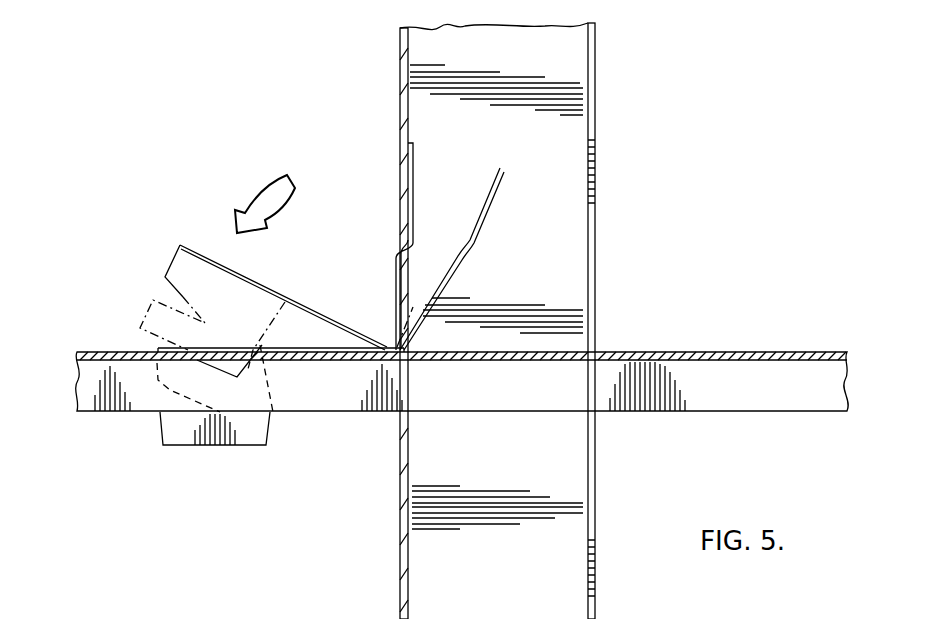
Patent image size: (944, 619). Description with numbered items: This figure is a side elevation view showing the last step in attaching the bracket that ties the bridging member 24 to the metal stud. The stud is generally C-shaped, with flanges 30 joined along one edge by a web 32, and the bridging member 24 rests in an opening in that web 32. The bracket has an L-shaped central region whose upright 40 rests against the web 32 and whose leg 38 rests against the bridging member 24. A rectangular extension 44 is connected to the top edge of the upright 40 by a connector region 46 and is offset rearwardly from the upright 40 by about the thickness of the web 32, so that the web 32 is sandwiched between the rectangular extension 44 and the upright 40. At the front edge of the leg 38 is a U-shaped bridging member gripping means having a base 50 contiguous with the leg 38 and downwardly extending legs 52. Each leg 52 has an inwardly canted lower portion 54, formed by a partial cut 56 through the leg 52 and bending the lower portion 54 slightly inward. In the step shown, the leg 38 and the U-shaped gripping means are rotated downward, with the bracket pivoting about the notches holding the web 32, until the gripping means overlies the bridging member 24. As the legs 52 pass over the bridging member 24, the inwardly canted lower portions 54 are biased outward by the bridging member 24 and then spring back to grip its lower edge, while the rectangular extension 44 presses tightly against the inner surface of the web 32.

The bridging member 24 is at (730, 365).
The flanges 30 is at (552, 50).
The web 32 is at (400, 52).
The leg 38 is at (332, 358).
The upright 40 is at (397, 298).
The rectangular extension 44 is at (413, 173).
The connector region 46 is at (400, 243).
The base 50 is at (183, 350).
The downwardly extending legs 52 is at (252, 397).
The inwardly canted lower portion 54 is at (177, 428).
The partial cut 56 is at (168, 395).